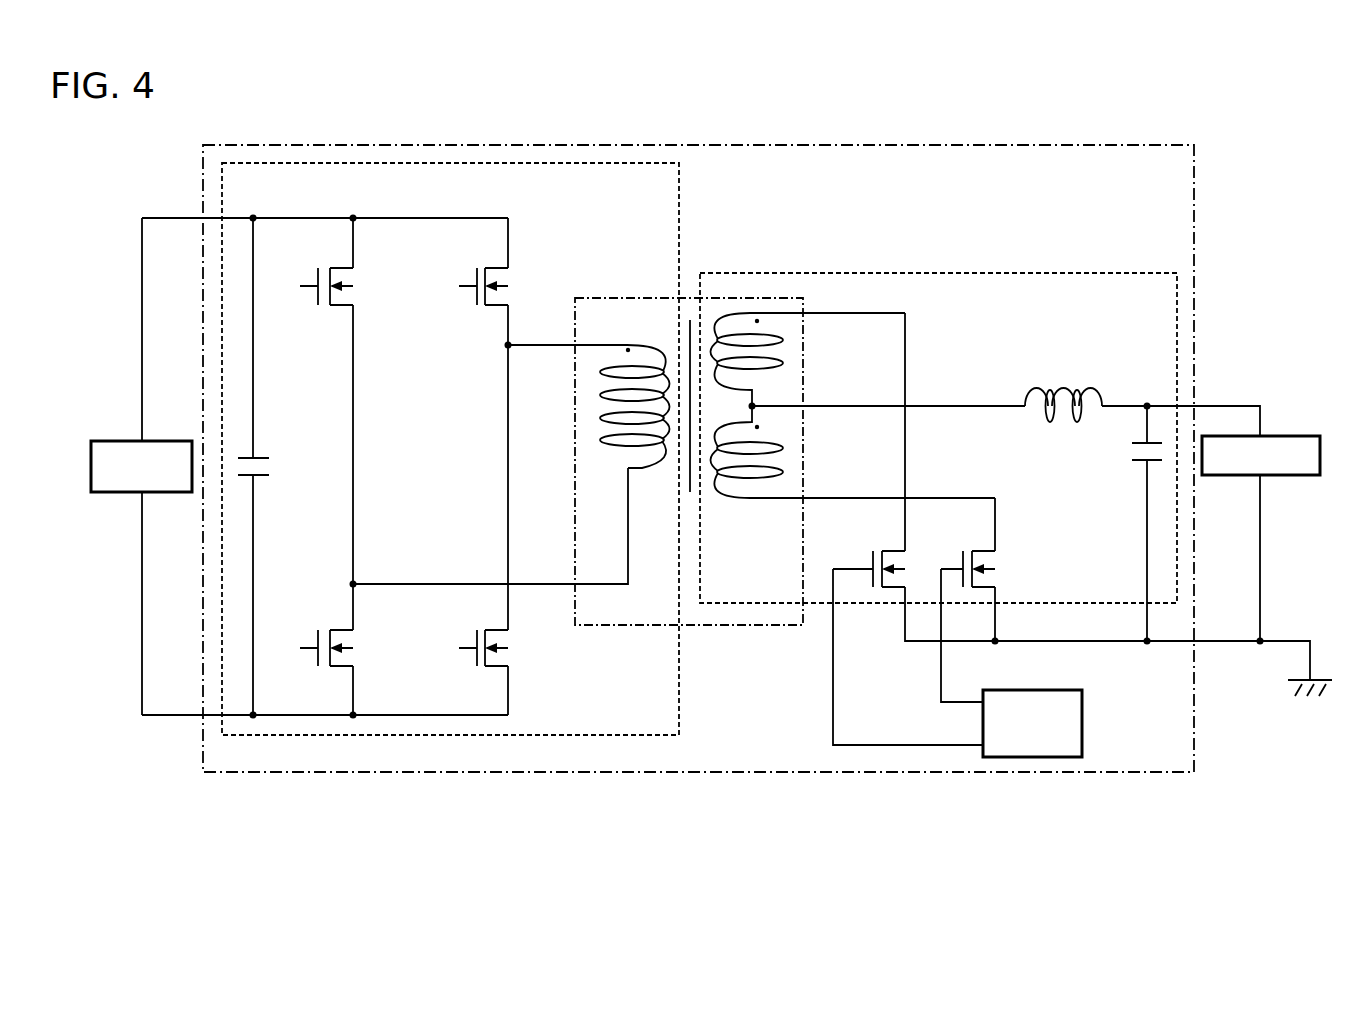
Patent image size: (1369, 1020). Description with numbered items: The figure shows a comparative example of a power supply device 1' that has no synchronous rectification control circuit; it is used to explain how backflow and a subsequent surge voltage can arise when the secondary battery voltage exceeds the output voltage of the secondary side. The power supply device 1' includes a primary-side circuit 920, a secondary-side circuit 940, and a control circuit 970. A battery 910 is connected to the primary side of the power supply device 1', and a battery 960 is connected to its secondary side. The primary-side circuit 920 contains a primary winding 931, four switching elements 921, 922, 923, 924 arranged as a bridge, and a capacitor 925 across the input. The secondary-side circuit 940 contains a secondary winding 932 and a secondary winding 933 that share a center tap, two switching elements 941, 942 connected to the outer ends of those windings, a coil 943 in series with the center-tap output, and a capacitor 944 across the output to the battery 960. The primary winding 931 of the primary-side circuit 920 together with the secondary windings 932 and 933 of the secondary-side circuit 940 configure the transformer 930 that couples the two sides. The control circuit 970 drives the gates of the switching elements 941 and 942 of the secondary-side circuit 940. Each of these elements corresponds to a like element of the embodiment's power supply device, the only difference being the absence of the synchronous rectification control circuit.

The power supply device 1' is at (739, 449).
The battery 910 is at (118, 440).
The primary-side circuit 920 is at (680, 187).
The switching element 921 is at (385, 272).
The switching element 922 is at (385, 634).
The switching element 923 is at (540, 272).
The switching element 924 is at (540, 634).
The capacitor 925 is at (292, 446).
The transformer 930 is at (645, 298).
The primary winding 931 is at (650, 336).
The secondary winding 932 is at (753, 370).
The secondary winding 933 is at (758, 448).
The secondary-side circuit 940 is at (752, 273).
The switching element 941 is at (935, 553).
The switching element 942 is at (990, 568).
The coil 943 is at (1100, 390).
The capacitor 944 is at (1130, 455).
The battery 960 is at (1295, 436).
The control circuit 970 is at (1108, 706).